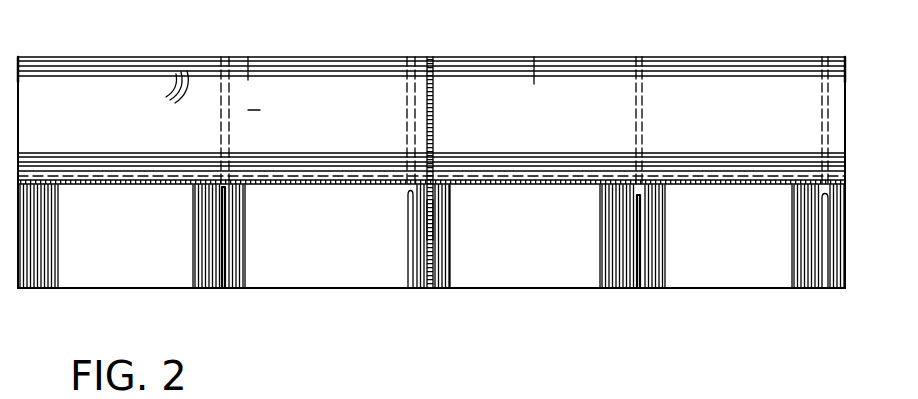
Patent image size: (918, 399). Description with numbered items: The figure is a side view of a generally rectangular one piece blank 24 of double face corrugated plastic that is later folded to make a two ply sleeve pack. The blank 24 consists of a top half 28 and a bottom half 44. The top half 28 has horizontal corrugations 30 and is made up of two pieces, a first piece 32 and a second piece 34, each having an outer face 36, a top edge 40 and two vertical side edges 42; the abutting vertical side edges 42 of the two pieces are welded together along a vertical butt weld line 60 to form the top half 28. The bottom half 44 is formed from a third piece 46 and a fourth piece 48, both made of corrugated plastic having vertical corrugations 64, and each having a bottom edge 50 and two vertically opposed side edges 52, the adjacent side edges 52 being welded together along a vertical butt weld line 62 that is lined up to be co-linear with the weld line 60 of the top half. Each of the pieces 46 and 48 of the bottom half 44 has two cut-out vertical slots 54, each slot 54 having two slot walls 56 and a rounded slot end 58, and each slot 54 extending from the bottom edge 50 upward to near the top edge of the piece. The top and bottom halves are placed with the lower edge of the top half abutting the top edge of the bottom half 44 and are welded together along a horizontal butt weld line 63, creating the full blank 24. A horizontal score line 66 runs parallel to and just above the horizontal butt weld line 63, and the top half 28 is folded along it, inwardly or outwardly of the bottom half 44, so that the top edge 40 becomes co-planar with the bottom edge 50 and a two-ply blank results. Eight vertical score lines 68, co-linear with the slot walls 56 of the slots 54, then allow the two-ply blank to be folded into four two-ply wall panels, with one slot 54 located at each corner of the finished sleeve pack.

The blank 24 is at (270, 314).
The top half 28 is at (362, 30).
The horizontal corrugations 30 is at (161, 91).
The first piece 32 is at (248, 80).
The second piece 34 is at (528, 85).
The outer face 36 is at (315, 117).
The top edge 40 is at (582, 60).
The vertical side edges 42 is at (18, 80).
The bottom half 44 is at (500, 290).
The third piece 46 is at (136, 278).
The fourth piece 48 is at (696, 278).
The bottom edge 50 is at (566, 290).
The side edges 52 is at (22, 290).
The vertical slots 54 is at (223, 291).
The slot walls 56 is at (227, 258).
The slot end 58 is at (228, 194).
The vertical butt weld line 60 is at (434, 118).
The vertical butt weld line 62 is at (434, 218).
The horizontal butt weld line 63 is at (568, 183).
The vertical corrugations 64 is at (602, 263).
The horizontal score line 66 is at (686, 178).
The vertical score lines 68 is at (222, 130).